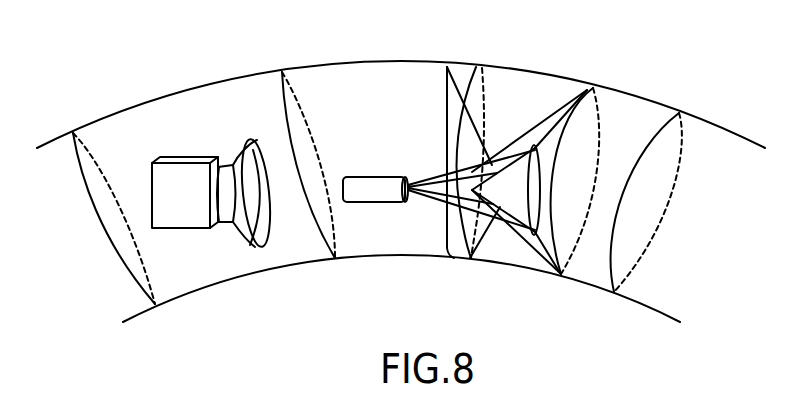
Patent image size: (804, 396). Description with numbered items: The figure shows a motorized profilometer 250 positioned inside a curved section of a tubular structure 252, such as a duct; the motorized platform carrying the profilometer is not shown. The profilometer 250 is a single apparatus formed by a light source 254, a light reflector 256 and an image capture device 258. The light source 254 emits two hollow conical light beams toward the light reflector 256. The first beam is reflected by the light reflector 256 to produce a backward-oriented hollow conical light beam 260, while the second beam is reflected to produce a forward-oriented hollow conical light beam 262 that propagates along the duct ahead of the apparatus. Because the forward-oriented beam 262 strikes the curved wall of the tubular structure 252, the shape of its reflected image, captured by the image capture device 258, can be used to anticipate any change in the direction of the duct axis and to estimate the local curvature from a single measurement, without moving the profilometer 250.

The motorized profilometer 250 is at (143, 68).
The tubular structure 252 is at (253, 72).
The light source 254 is at (390, 197).
The light reflector 256 is at (538, 198).
The image capture device 258 is at (192, 218).
The backward-oriented hollow conical light beam 260 is at (455, 80).
The forward-oriented hollow conical light beam 262 is at (553, 110).